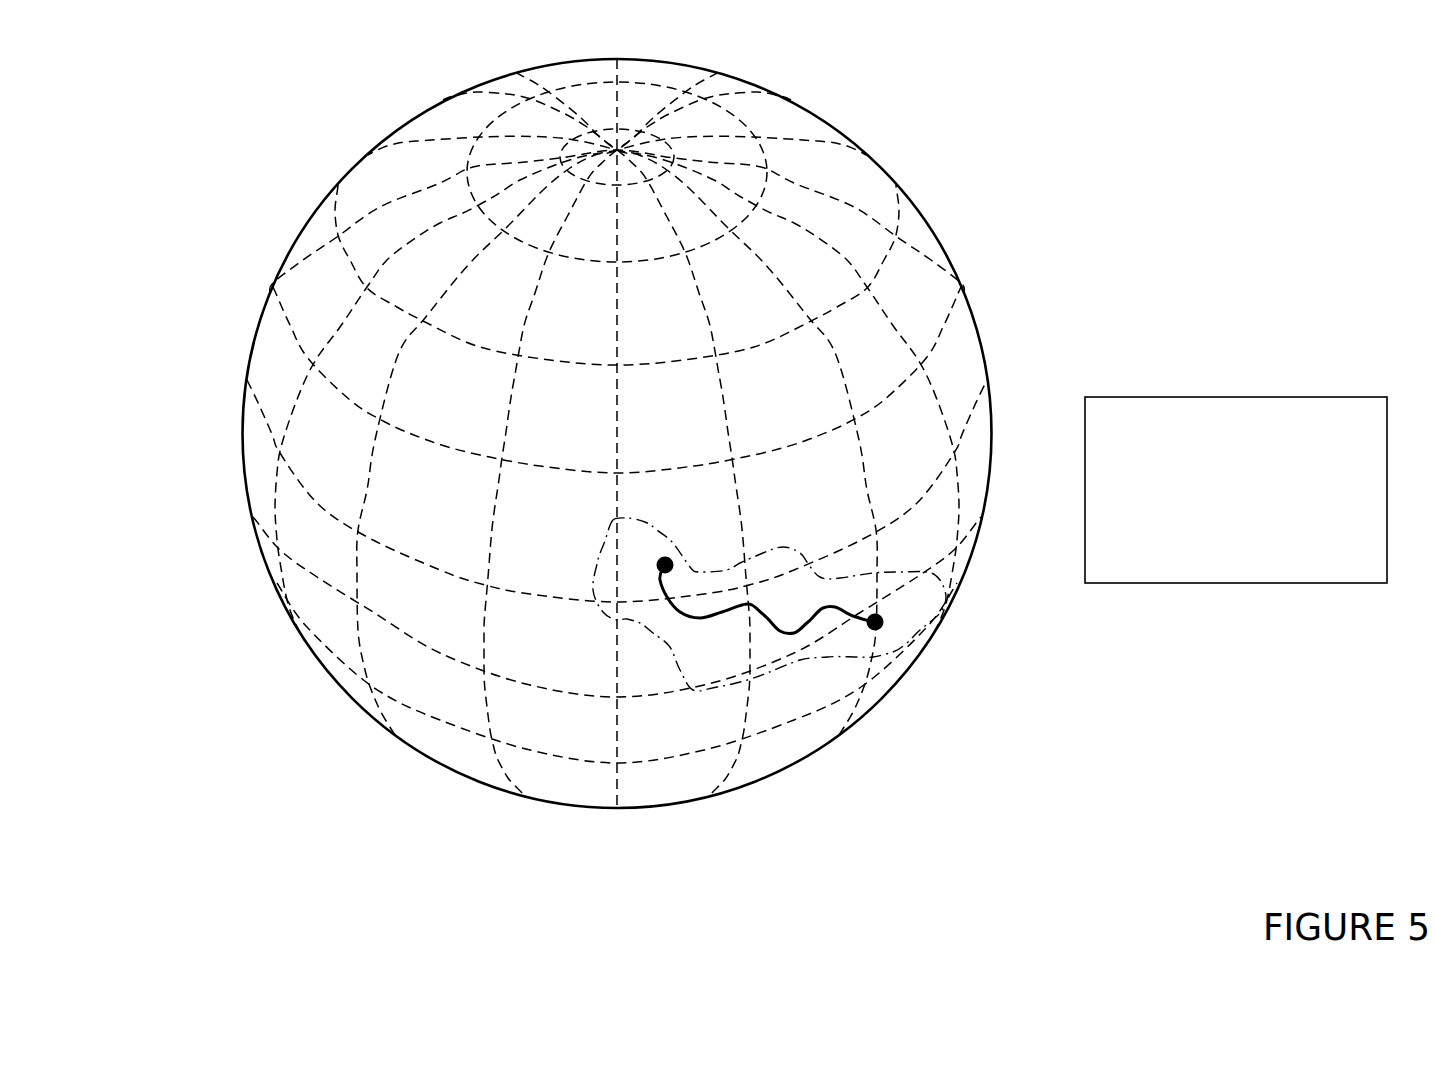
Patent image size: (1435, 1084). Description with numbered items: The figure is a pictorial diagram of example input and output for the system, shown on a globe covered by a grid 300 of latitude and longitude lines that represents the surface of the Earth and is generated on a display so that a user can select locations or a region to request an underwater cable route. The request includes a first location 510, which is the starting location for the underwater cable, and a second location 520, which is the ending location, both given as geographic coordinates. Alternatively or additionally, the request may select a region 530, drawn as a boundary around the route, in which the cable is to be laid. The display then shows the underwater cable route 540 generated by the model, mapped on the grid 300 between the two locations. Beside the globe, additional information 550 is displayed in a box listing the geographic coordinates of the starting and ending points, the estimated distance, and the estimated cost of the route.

The grid 300 is at (247, 198).
The first location 510 is at (660, 568).
The second location 520 is at (879, 629).
The region 530 is at (770, 542).
The underwater cable route 540 is at (878, 615).
The additional information 550 is at (1125, 397).